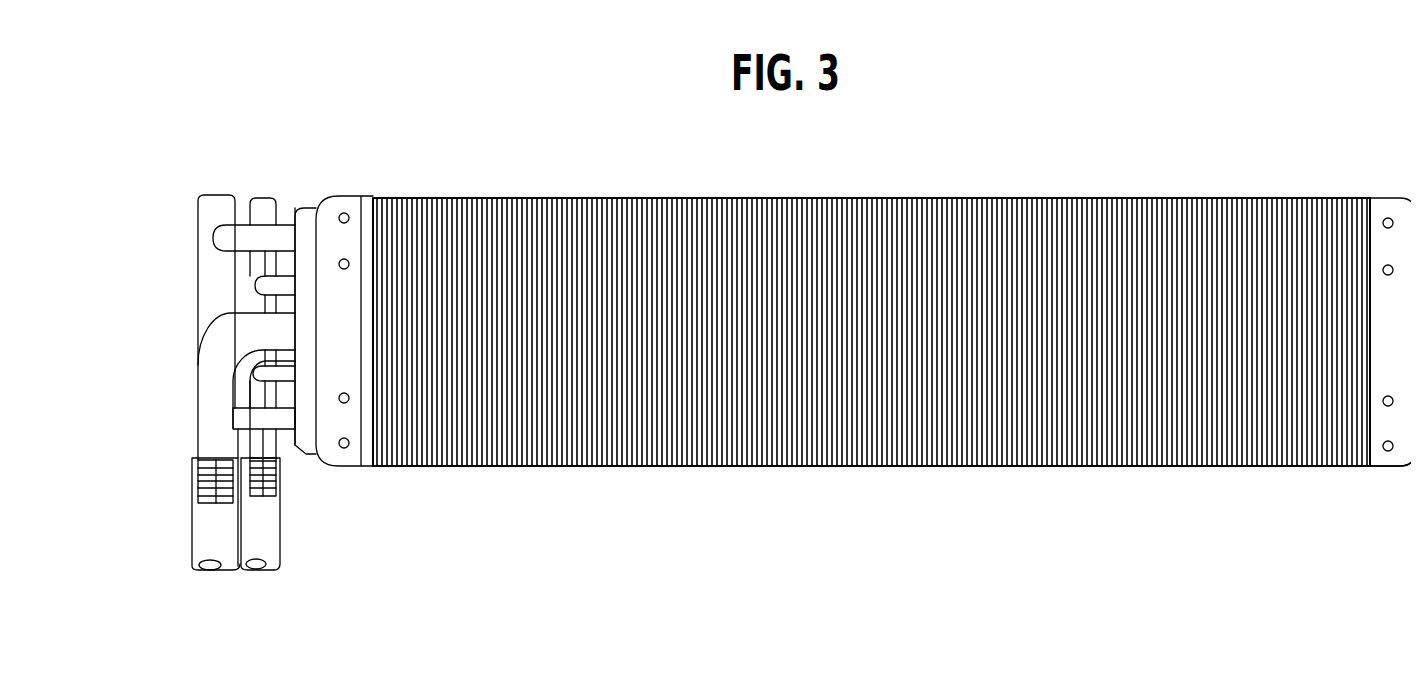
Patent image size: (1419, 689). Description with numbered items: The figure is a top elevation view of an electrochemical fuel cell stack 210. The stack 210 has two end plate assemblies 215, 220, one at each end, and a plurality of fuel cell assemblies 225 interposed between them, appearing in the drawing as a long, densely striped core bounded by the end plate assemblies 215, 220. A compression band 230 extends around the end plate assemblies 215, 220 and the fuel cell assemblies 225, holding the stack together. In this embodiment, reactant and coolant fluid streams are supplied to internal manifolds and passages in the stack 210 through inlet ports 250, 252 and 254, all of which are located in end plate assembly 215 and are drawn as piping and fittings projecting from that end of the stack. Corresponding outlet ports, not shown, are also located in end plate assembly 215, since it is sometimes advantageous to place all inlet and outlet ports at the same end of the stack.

The electrochemical fuel cell stack 210 is at (912, 160).
The end plate assembly 215 is at (337, 195).
The end plate assembly 220 is at (1390, 445).
The fuel cell assemblies 225 is at (792, 458).
The compression band 230 is at (1305, 190).
The inlet port 250 is at (252, 230).
The inlet port 252 is at (207, 365).
The inlet port 254 is at (275, 418).